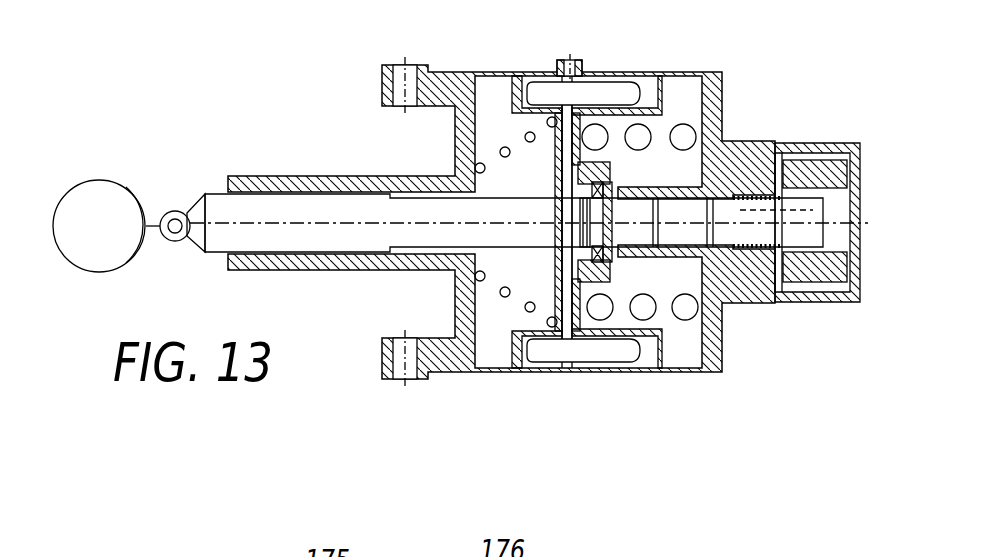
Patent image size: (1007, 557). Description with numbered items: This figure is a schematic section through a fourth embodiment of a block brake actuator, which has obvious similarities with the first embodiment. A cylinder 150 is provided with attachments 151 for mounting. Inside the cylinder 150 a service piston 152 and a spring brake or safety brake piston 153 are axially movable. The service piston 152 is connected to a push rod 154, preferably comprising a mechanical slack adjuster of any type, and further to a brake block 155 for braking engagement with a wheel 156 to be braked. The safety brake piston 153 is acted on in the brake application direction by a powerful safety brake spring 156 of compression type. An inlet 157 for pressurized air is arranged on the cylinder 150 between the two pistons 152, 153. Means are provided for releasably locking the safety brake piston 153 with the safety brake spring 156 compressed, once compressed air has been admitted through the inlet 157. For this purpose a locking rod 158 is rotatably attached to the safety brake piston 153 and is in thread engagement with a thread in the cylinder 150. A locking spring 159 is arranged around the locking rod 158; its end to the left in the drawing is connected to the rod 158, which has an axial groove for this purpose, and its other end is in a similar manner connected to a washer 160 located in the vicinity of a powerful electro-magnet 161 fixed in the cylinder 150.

The cylinder 150 is at (485, 70).
The attachments 151 is at (420, 66).
The service piston 152 is at (534, 85).
The safety brake piston 153 is at (646, 72).
The push rod 154 is at (268, 208).
The brake block 155 is at (128, 186).
The wheel / safety brake spring 156 is at (92, 193).
The inlet 157 is at (572, 60).
The locking rod 158 is at (746, 248).
The locking spring 159 is at (782, 296).
The washer 160 is at (765, 143).
The electro-magnet 161 is at (812, 160).